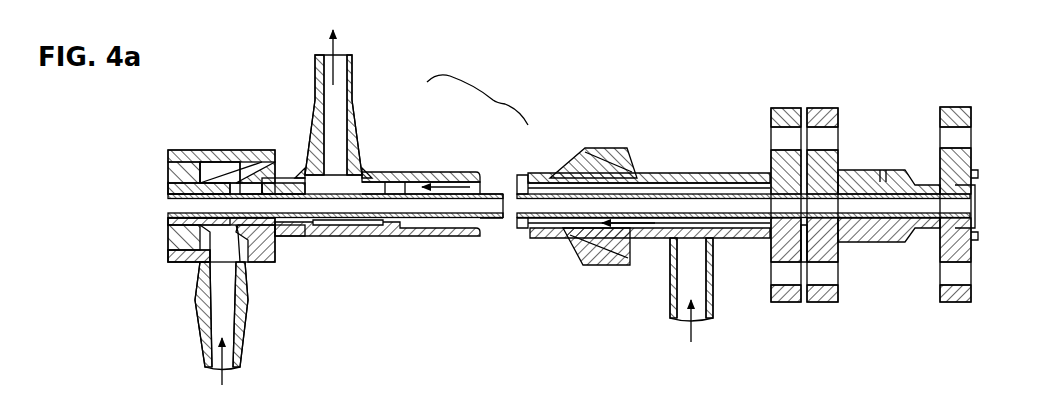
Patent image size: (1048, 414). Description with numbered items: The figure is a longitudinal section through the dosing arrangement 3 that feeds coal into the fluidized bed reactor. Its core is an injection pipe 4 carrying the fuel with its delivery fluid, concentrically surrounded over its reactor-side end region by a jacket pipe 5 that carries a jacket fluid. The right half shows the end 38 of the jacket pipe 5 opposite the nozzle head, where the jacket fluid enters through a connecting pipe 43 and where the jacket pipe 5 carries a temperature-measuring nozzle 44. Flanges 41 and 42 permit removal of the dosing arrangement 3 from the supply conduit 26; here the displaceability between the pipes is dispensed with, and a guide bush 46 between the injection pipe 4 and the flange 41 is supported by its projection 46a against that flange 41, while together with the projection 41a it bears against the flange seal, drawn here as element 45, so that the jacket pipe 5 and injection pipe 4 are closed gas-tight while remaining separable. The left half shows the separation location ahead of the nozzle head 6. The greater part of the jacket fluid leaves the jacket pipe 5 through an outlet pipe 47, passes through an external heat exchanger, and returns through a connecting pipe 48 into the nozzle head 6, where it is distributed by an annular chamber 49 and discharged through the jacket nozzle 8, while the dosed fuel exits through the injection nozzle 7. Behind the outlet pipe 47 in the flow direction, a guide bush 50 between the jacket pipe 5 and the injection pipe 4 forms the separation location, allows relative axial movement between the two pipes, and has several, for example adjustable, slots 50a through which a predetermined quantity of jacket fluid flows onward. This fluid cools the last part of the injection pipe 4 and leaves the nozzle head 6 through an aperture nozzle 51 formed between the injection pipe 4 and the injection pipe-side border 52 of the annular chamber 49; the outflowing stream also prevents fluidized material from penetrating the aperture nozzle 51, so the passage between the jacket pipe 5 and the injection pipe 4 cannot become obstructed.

The dosing arrangement 3 is at (458, 160).
The injection pipe 4 is at (497, 220).
The jacket pipe 5 is at (346, 237).
The nozzle head 6 is at (190, 140).
The injection nozzle 7 is at (167, 206).
The jacket nozzle 8 is at (170, 246).
The supply conduit 26 is at (972, 215).
The end of the jacket pipe 38 is at (896, 250).
The flange 41 is at (778, 108).
The projection 41a is at (820, 108).
The flange 42 is at (803, 178).
The connecting pipe 43 is at (670, 306).
The temperature-measuring nozzle 44 is at (626, 160).
The seal 45 is at (826, 242).
The guide bush 46 is at (770, 238).
The projection 46a is at (778, 176).
The outlet pipe 47 is at (360, 122).
The connecting pipe 48 is at (240, 328).
The annular chamber 49 is at (212, 163).
The guide bush 50 is at (290, 237).
The slots 50a is at (290, 180).
The aperture nozzle 51 is at (167, 222).
The injection pipe-side border 52 is at (167, 190).